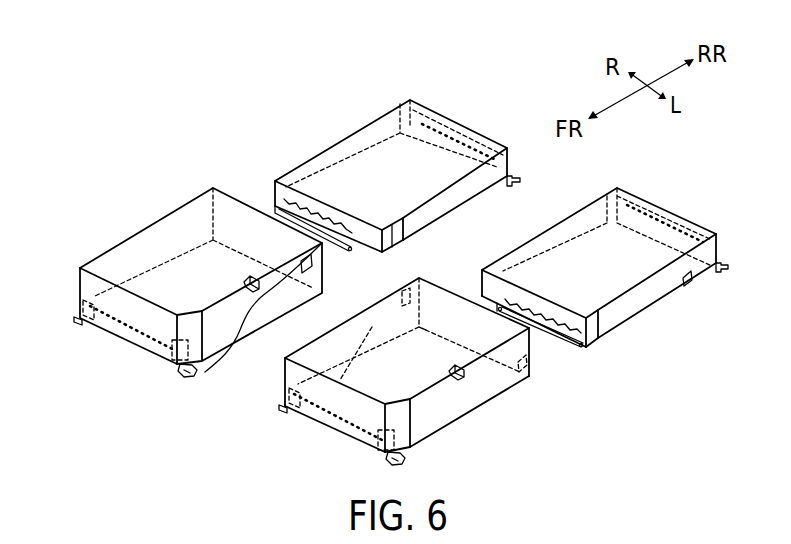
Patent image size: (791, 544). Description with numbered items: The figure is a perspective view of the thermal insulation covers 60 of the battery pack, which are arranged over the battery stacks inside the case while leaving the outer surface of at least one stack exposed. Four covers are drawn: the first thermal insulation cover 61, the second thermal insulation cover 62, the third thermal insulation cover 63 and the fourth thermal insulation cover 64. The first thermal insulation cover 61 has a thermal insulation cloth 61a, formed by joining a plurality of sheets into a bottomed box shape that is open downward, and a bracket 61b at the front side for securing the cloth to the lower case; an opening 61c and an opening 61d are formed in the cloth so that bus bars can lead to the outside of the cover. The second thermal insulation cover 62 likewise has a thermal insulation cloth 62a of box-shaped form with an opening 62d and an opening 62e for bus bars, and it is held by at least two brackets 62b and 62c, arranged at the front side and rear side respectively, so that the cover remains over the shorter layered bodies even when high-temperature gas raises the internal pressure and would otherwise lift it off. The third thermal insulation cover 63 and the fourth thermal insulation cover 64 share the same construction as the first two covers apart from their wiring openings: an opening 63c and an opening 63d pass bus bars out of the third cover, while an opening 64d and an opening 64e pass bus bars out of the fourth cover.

The thermal insulation covers 60 is at (277, 172).
The first thermal insulation cover 61 is at (172, 162).
The thermal insulation cloth 61a is at (160, 232).
The bracket 61b is at (92, 305).
The opening 61c is at (188, 375).
The opening 61d is at (321, 292).
The second thermal insulation cover 62 is at (417, 61).
The thermal insulation cloth 62a is at (367, 130).
The bracket 62b is at (317, 183).
The bracket 62c is at (410, 107).
The opening 62d is at (386, 240).
The opening 62e is at (407, 224).
The third thermal insulation cover 63 is at (431, 424).
The opening 63c is at (290, 407).
The opening 63d is at (426, 330).
The fourth thermal insulation cover 64 is at (647, 303).
The opening 64d is at (483, 293).
The opening 64e is at (503, 271).